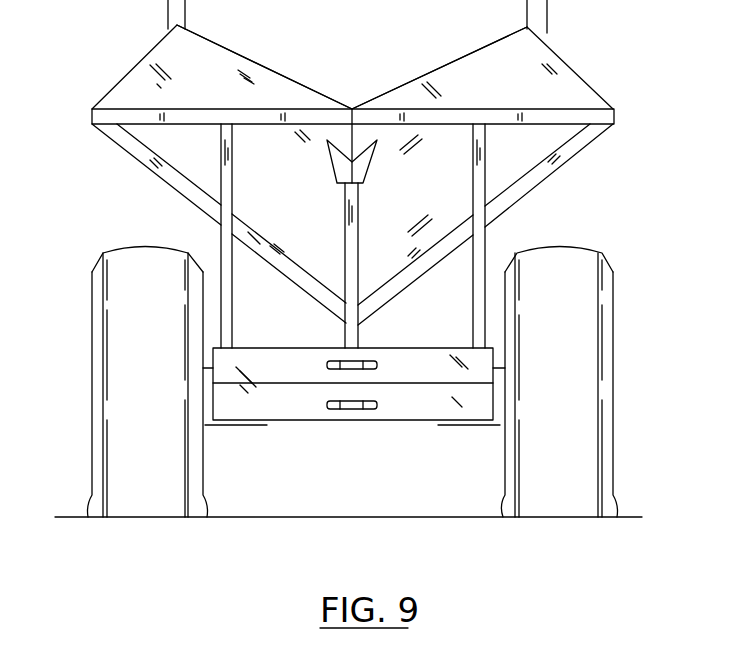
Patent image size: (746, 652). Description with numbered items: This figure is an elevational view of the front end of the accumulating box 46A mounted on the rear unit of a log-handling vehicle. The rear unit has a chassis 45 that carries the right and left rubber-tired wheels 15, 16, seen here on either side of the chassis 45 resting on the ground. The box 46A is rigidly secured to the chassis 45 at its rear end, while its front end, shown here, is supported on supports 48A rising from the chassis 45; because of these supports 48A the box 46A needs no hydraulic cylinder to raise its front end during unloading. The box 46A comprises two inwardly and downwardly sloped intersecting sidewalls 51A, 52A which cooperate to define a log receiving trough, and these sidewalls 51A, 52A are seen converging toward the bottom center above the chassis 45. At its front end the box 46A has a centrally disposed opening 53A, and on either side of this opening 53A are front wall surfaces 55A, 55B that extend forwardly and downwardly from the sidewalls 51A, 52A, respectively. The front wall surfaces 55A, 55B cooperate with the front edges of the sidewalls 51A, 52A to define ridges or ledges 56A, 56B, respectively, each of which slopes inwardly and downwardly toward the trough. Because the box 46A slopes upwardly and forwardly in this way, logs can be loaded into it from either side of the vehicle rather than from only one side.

The right rubber-tired wheel 15 is at (605, 342).
The left rubber-tired wheel 16 is at (100, 333).
The chassis 45 is at (415, 415).
The accumulating box 46A is at (602, 92).
The supports 48A is at (357, 218).
The sidewall 51A is at (185, 170).
The sidewall 52A is at (527, 167).
The centrally disposed opening 53A is at (352, 100).
The front wall surface 55A is at (218, 89).
The front wall surface 55B is at (519, 86).
The ridge or ledge 56A is at (247, 58).
The ridge or ledge 56B is at (472, 52).